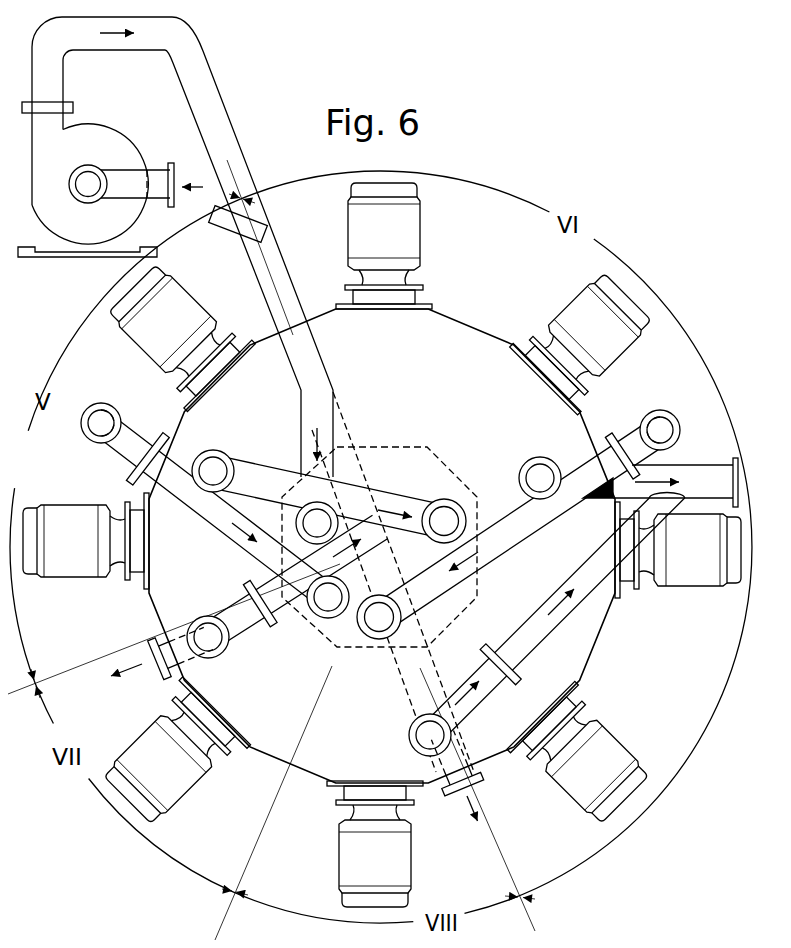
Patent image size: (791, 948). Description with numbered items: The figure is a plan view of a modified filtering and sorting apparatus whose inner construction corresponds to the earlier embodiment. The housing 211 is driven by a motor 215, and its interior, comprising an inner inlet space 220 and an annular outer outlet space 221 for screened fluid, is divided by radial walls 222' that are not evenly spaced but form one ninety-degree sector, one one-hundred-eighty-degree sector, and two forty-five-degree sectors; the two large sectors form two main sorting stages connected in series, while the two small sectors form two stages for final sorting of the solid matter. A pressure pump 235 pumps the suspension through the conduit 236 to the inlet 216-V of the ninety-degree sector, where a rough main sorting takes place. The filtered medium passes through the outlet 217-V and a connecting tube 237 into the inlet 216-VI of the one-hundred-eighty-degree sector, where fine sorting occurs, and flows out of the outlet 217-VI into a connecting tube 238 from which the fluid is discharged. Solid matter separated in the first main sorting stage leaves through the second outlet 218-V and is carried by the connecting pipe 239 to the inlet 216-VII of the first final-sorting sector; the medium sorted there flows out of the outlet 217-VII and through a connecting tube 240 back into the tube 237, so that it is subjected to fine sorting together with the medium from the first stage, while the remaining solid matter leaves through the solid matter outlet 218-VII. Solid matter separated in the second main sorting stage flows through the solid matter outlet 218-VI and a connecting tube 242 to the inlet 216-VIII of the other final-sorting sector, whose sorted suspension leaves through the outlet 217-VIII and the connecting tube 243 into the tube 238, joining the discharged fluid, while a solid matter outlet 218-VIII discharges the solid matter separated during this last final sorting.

The housing 211 is at (476, 320).
The drive motor 215 is at (412, 228).
The inlet of sector V 216-V is at (308, 500).
The inlet of sector VI 216-VI is at (482, 486).
The inlet of sector VII 216-VII is at (320, 620).
The inlet of sector VIII 216-VIII is at (380, 641).
The outlet of stage V 217-V is at (200, 462).
The outlet of stage VI 217-VI is at (540, 460).
The outlet of sector VII 217-VII is at (200, 617).
The outlet of sector VIII 217-VIII is at (418, 740).
The second outlet of sector V 218-V is at (163, 433).
The solid matter outlet of sector VI 218-VI is at (612, 425).
The solid matter outlet of sector VII 218-VII is at (153, 645).
The solid matter outlet of sector VIII 218-VIII is at (475, 782).
The inner inlet space 220 is at (429, 476).
The annular outer outlet space 221 is at (313, 760).
The radial walls 222' is at (275, 554).
The pressure pump 235 is at (110, 140).
The conduit 236 is at (283, 258).
The connecting tube 237 is at (377, 495).
The connecting tube 238 is at (702, 473).
The connecting pipe 239 is at (182, 493).
The connecting tube 240 is at (287, 617).
The connecting tube 242 is at (530, 530).
The connecting tube 243 is at (515, 648).